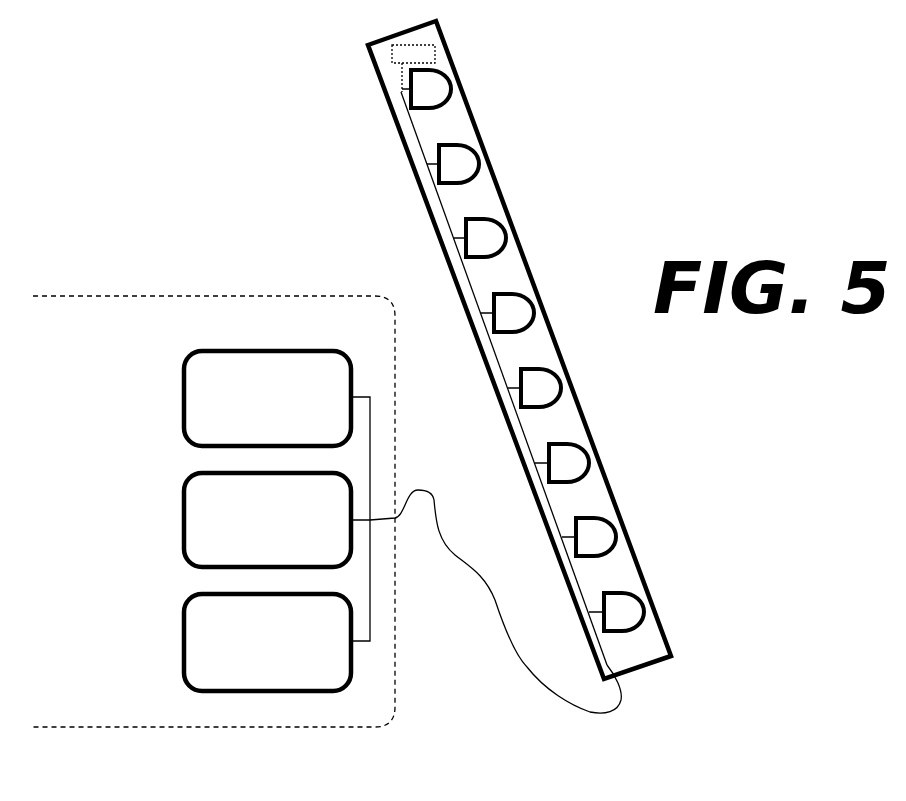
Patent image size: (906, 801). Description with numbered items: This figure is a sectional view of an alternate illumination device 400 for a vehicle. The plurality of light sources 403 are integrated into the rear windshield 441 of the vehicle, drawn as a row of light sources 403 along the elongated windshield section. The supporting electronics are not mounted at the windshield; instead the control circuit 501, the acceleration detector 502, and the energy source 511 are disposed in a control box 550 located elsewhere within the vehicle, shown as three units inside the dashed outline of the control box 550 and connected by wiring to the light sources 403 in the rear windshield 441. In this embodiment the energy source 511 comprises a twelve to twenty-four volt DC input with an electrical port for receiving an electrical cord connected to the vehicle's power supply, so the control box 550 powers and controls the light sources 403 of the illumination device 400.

The illumination device 400 is at (643, 223).
The rear windshield 441 is at (497, 173).
The light sources 403 is at (534, 317).
The control box 550 is at (180, 295).
The control circuit 501 is at (183, 392).
The acceleration detector 502 is at (183, 517).
The energy source 511 is at (182, 641).